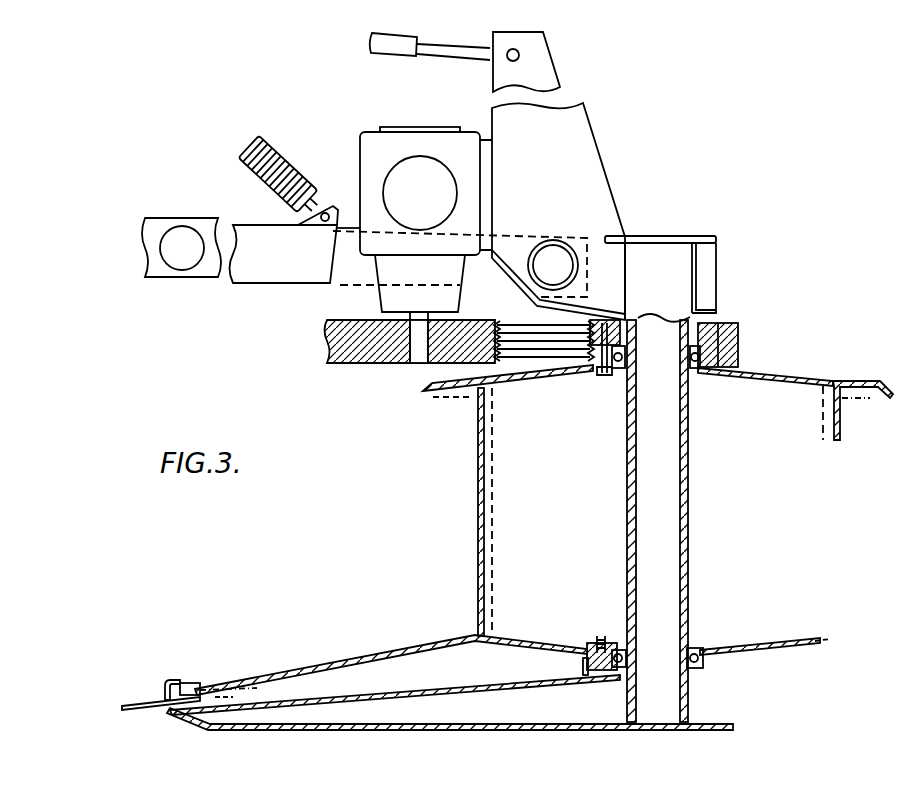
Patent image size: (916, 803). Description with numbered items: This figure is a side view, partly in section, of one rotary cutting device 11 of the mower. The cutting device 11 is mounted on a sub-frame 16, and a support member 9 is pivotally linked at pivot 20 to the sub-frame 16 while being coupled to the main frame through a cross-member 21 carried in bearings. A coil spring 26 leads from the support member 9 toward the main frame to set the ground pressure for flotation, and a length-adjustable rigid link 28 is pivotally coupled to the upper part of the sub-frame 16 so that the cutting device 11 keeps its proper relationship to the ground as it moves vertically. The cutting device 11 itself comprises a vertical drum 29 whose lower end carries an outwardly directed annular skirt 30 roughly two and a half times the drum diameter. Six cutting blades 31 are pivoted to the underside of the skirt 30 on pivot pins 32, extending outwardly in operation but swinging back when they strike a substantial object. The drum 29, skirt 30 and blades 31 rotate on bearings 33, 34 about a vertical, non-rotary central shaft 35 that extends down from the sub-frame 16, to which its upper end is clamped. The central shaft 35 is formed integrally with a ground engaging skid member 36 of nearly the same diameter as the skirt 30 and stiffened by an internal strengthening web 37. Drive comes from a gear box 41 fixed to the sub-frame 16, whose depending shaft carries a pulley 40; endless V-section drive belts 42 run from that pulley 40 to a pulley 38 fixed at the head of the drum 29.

The support member 9 is at (257, 273).
The rotary cutting device 11 is at (470, 472).
The sub-frame 16 is at (588, 157).
The pivot 20 is at (560, 245).
The cross-member 21 is at (180, 233).
The coil spring 26 is at (295, 157).
The rigid link 28 is at (388, 48).
The vertical drum 29 is at (841, 418).
The annular flange or skirt 30 is at (320, 653).
The cutting blades 31 is at (140, 700).
The pivot pins 32 is at (188, 678).
The bearing 33 is at (700, 642).
The bearing 34 is at (700, 374).
The central shaft 35 is at (688, 465).
The skid member 36 is at (508, 723).
The internal strengthening web 37 is at (393, 690).
The pulley 38 is at (723, 322).
The pulley 40 is at (355, 362).
The gear box 41 is at (392, 136).
The V-section drive belts 42 is at (537, 345).